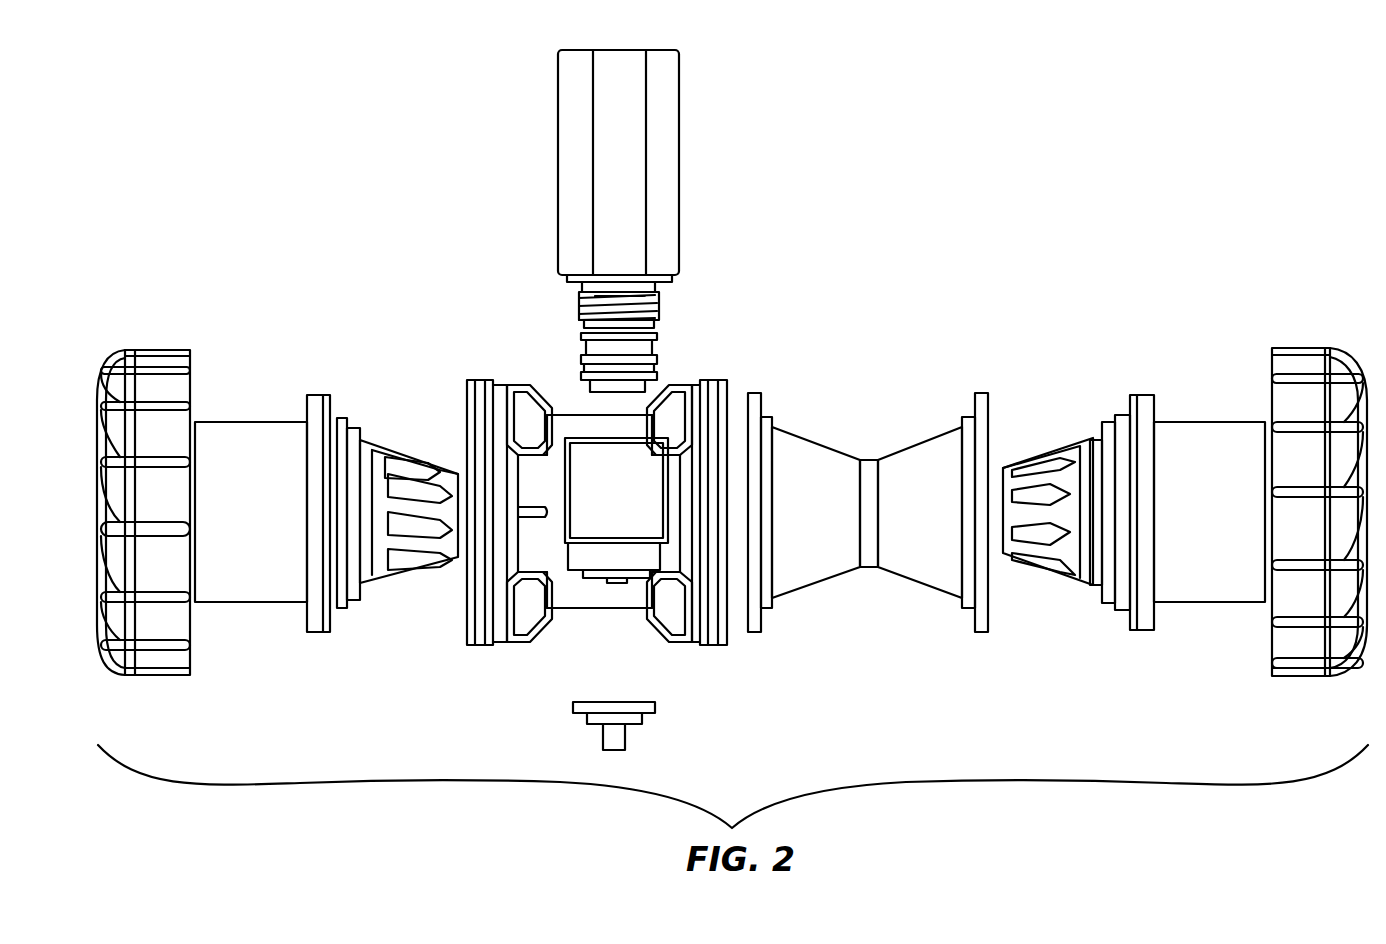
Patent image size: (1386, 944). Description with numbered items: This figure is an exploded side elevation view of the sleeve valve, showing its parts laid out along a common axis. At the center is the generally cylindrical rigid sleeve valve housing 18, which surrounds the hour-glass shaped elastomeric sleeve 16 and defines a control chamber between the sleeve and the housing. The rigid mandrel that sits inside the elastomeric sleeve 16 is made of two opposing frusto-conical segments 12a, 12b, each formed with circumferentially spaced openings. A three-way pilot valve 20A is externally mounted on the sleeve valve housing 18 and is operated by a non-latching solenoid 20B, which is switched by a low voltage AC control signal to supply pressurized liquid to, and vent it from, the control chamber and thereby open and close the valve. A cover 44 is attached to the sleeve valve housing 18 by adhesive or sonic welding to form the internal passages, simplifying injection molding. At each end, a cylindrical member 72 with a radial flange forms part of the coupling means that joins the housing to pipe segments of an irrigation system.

The frusto-conical segment 12a is at (352, 422).
The frusto-conical segment 12b is at (1147, 512).
The elastomeric sleeve 16 is at (808, 446).
The sleeve valve housing 18 is at (582, 424).
The three-way pilot valve 20A is at (616, 510).
The non-latching solenoid 20B is at (681, 83).
The cover 44 is at (636, 700).
The cylindrical member 72 is at (1190, 421).